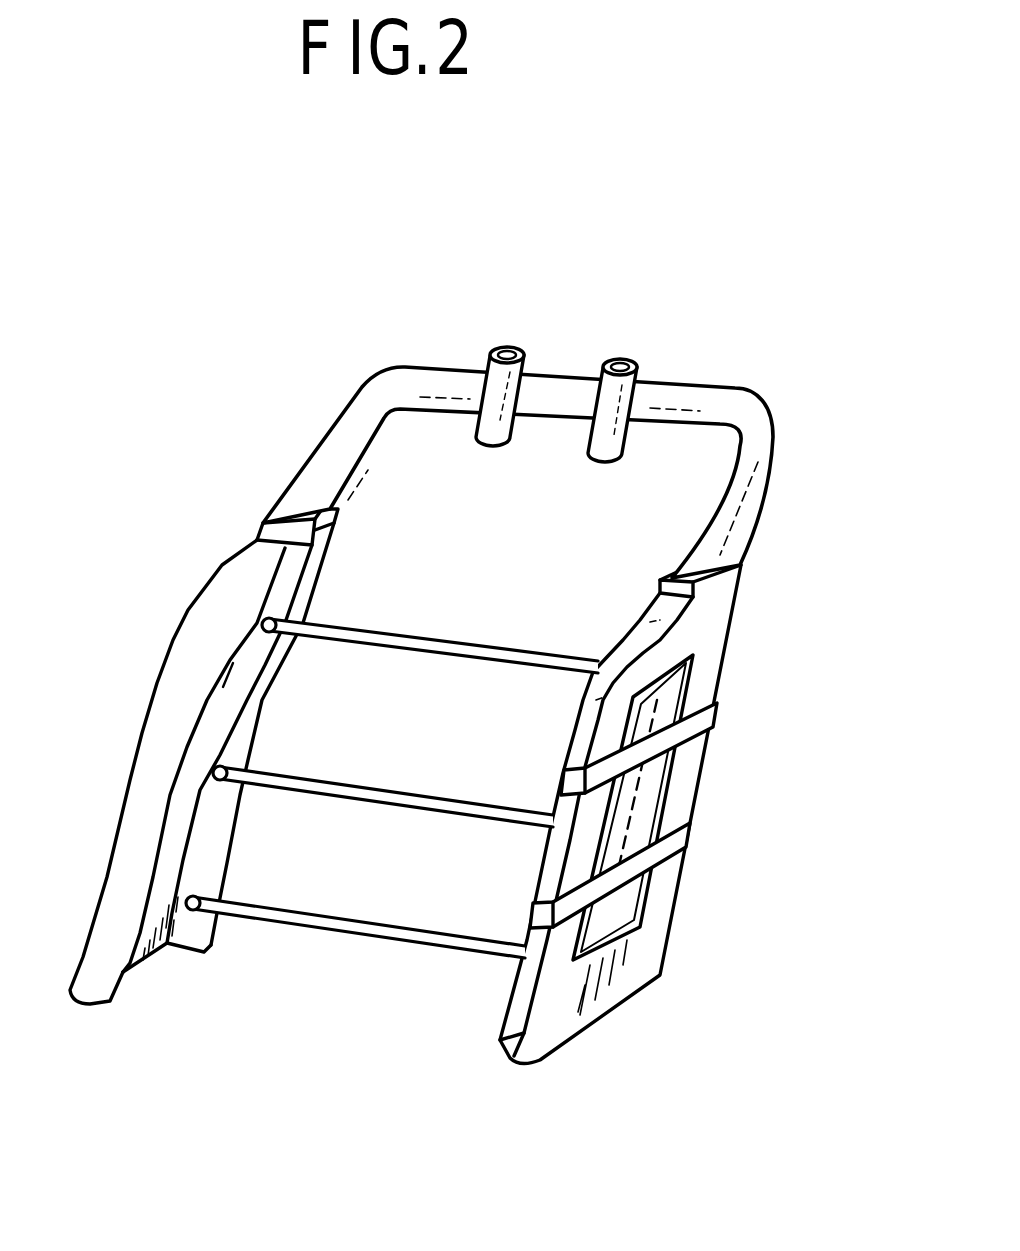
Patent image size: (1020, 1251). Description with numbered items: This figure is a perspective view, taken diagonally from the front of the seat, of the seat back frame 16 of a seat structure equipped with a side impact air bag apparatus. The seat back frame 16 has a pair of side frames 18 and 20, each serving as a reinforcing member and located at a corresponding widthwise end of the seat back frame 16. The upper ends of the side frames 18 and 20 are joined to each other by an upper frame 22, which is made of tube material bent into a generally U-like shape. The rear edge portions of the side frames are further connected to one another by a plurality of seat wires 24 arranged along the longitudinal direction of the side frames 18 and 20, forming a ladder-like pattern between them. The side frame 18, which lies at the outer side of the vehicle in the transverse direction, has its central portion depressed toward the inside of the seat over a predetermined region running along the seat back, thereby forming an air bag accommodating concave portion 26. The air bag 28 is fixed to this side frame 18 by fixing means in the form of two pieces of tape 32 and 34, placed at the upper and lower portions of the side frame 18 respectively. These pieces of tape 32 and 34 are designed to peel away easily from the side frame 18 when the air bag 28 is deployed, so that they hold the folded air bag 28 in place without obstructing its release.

The seat back frame 16 is at (812, 440).
The side frame 18 is at (713, 800).
The side frame 20 is at (205, 600).
The upper frame 22 is at (551, 396).
The seat wires 24 is at (467, 647).
The air bag accommodating concave portion 26 is at (643, 810).
The air bag 28 is at (675, 690).
The tape 32 is at (712, 724).
The tape 34 is at (684, 862).